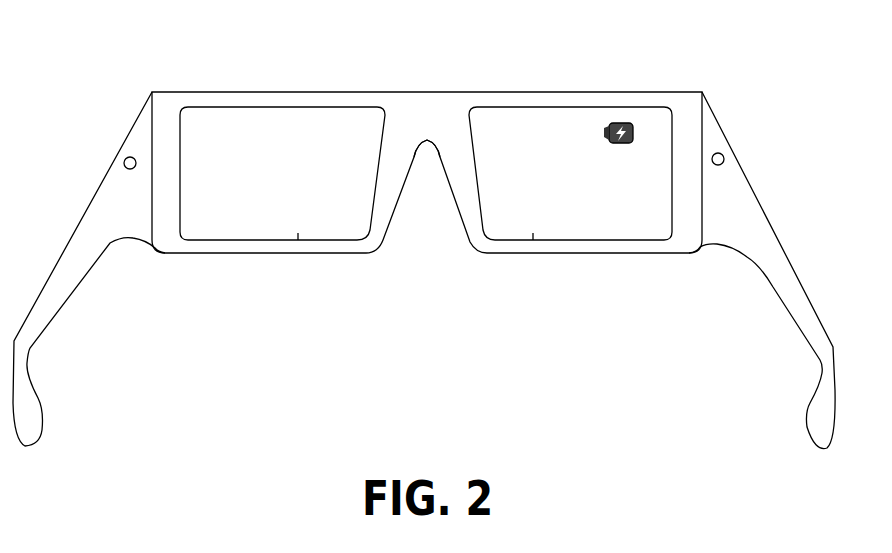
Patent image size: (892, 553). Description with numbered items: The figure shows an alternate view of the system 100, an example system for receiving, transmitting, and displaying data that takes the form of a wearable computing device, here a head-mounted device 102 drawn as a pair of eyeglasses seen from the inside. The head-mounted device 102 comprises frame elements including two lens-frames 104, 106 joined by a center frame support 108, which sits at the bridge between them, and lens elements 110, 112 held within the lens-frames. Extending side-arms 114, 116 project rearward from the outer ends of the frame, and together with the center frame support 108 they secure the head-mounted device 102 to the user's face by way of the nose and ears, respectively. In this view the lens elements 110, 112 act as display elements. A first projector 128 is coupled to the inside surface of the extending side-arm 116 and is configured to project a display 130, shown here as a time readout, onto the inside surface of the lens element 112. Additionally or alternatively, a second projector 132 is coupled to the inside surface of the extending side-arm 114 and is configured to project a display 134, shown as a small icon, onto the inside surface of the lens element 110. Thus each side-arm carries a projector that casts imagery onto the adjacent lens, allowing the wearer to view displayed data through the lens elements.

The system 100 is at (663, 360).
The head-mounted device 102 is at (205, 78).
The lens-frame 104 is at (660, 255).
The lens-frame 106 is at (202, 255).
The center frame support 108 is at (425, 92).
The lens element 110 is at (533, 233).
The lens element 112 is at (298, 233).
The extending side-arm 114 is at (758, 198).
The extending side-arm 116 is at (72, 233).
The first projector 128 is at (124, 161).
The display 130 is at (275, 135).
The second projector 132 is at (718, 153).
The display 134 is at (608, 139).